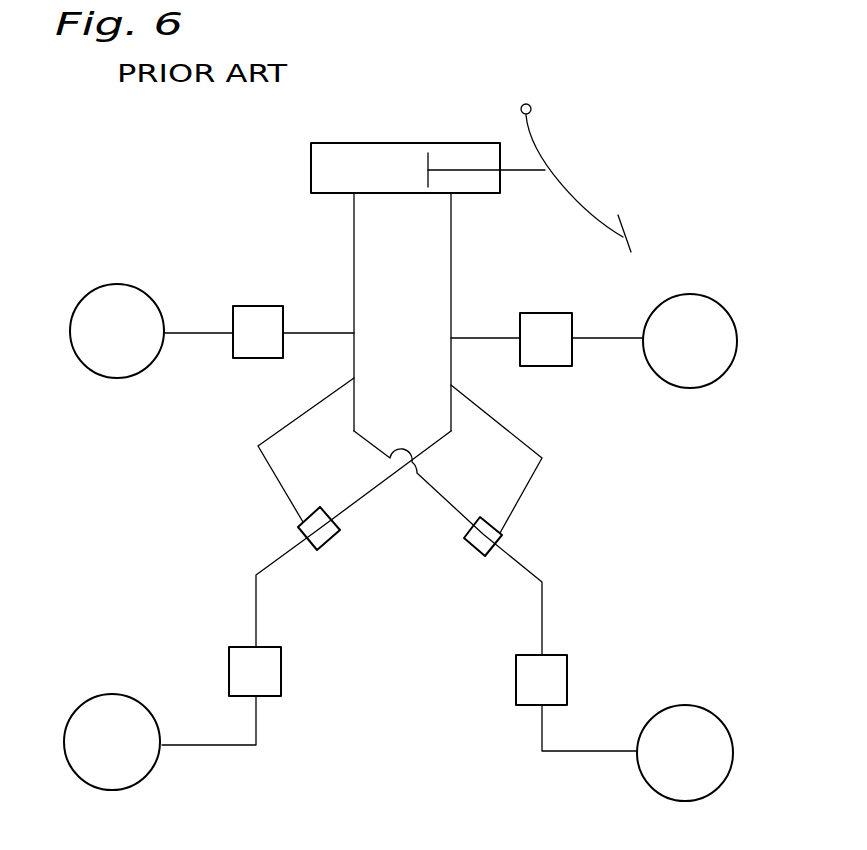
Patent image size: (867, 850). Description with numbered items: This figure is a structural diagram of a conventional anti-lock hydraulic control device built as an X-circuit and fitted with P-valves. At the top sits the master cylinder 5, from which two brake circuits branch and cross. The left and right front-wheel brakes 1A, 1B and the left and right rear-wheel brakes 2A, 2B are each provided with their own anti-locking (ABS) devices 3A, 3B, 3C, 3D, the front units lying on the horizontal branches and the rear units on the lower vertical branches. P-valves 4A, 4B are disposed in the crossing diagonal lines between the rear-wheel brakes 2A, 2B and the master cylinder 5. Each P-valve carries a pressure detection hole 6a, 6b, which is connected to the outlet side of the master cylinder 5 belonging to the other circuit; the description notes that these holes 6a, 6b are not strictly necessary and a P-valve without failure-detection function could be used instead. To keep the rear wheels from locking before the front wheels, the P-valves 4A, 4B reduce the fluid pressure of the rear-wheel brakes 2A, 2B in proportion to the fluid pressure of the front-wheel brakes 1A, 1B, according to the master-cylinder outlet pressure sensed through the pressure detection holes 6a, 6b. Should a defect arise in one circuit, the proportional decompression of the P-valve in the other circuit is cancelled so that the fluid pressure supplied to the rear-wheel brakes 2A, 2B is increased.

The master cylinder 5 is at (372, 143).
The front-wheel brake 1A is at (120, 284).
The front-wheel brake 1B is at (693, 295).
The rear-wheel brake 2A is at (160, 756).
The rear-wheel brake 2B is at (639, 771).
The anti-locking device 3A is at (262, 306).
The anti-locking device 3B is at (540, 313).
The anti-locking device 3C is at (281, 673).
The anti-locking device 3D is at (516, 682).
The P-valve 4A is at (333, 541).
The P-valve 4B is at (467, 548).
The pressure detection hole 6a is at (308, 516).
The pressure detection hole 6b is at (500, 524).